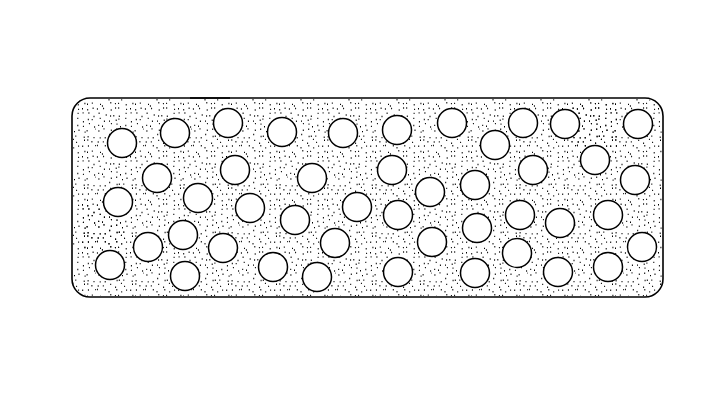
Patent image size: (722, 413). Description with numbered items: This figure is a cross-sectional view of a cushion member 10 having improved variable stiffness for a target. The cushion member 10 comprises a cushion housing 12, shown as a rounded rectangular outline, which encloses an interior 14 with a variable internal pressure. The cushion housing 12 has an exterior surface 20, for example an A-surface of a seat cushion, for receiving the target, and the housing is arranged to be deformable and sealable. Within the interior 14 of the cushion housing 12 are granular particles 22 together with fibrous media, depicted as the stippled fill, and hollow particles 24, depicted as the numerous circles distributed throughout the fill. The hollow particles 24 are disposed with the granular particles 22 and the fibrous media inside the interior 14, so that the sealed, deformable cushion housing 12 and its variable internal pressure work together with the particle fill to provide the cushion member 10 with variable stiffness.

The cushion member 10 is at (302, 55).
The cushion housing 12 is at (72, 142).
The interior 14 is at (342, 163).
The exterior surface 20 is at (210, 100).
The granular particles 22 is at (595, 115).
The hollow particles 24 is at (633, 123).